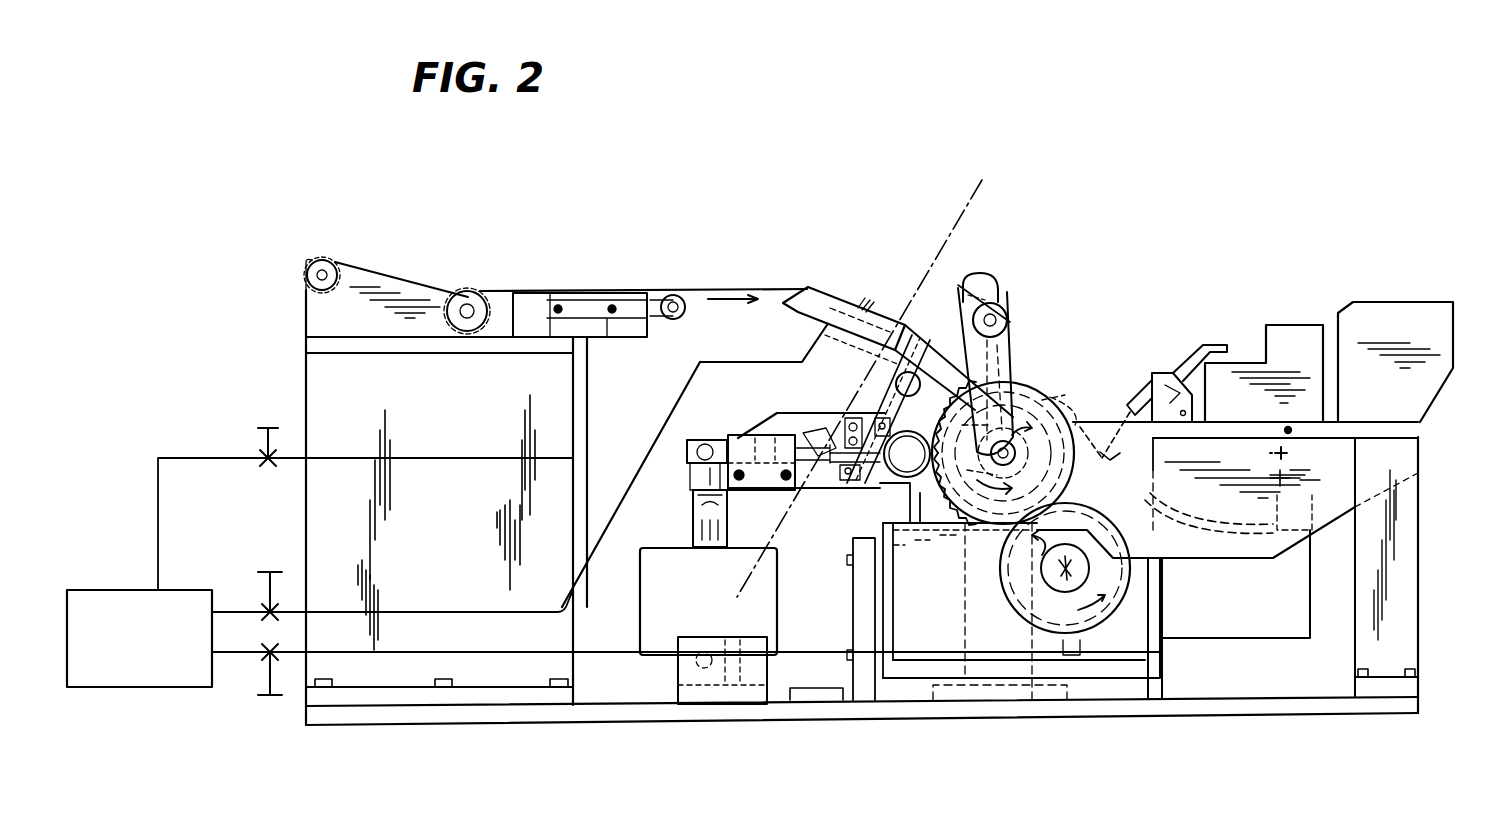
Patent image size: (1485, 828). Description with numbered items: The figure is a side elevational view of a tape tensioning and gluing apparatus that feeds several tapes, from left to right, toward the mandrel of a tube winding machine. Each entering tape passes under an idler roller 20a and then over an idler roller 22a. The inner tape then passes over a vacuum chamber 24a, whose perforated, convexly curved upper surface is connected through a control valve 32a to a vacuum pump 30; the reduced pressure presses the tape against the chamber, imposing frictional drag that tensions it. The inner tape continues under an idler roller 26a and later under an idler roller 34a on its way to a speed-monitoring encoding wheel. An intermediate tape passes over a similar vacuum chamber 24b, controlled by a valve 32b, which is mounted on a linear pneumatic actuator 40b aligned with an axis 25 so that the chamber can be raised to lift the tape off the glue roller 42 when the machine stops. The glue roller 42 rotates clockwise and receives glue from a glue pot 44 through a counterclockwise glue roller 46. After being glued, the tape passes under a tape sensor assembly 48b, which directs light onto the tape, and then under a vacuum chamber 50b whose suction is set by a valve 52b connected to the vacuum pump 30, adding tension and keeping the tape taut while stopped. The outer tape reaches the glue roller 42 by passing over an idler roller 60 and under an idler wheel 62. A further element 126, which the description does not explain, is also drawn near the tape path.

The idler roller 20a is at (306, 275).
The idler roller 22a is at (480, 290).
The vacuum chamber 24a is at (613, 337).
The vacuum chamber 24b is at (808, 312).
The axis 25 is at (962, 200).
The idler roller 26a is at (668, 290).
The feed direction arrow 126 is at (745, 285).
The idler roller 60 is at (980, 275).
The idler roller 34a is at (1008, 312).
The idler wheel 62 is at (1022, 352).
The linear pneumatic actuator 40b is at (835, 390).
The glue roller 42 is at (1070, 480).
The glue pot 44 is at (1163, 580).
The glue roller 46 is at (1118, 606).
The tape sensor assembly 48b is at (1172, 347).
The vacuum chamber 50b is at (1305, 457).
The vacuum pump 30 is at (118, 592).
The control valve 32a is at (258, 436).
The valve 32b is at (262, 588).
The valve 52b is at (262, 680).